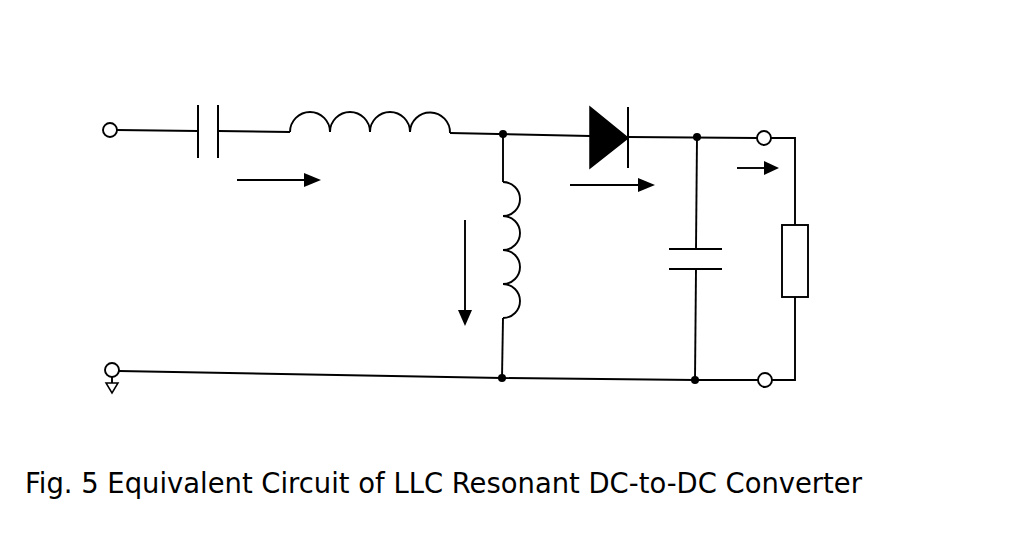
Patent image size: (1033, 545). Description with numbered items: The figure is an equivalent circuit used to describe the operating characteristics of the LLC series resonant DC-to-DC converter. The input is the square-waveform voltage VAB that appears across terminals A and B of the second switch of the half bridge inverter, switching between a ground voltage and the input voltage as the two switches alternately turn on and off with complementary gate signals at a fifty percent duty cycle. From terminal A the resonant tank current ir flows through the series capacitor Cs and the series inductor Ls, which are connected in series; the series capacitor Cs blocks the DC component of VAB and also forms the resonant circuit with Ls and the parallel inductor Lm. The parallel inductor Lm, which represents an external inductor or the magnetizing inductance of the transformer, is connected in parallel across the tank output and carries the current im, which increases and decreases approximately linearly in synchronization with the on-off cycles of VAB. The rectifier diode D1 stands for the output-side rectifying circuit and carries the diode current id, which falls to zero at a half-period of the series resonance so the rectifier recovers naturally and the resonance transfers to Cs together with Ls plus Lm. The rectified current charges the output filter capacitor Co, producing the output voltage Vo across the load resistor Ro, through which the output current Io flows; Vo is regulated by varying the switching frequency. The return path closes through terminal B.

The terminal A is at (92, 107).
The terminal B is at (91, 355).
The voltage VAB is at (61, 201).
The series capacitor Cs is at (214, 91).
The series inductor Ls is at (370, 78).
The parallel inductor Lm is at (534, 256).
The rectifier diode D1 is at (602, 94).
The output voltage Vo is at (727, 242).
The output filter capacitor Co is at (679, 258).
The load resistor Ro is at (818, 273).
The resonant tank current ir is at (279, 192).
The parallel inductor current im is at (435, 273).
The rectifier diode current id is at (612, 196).
The output current Io is at (756, 178).